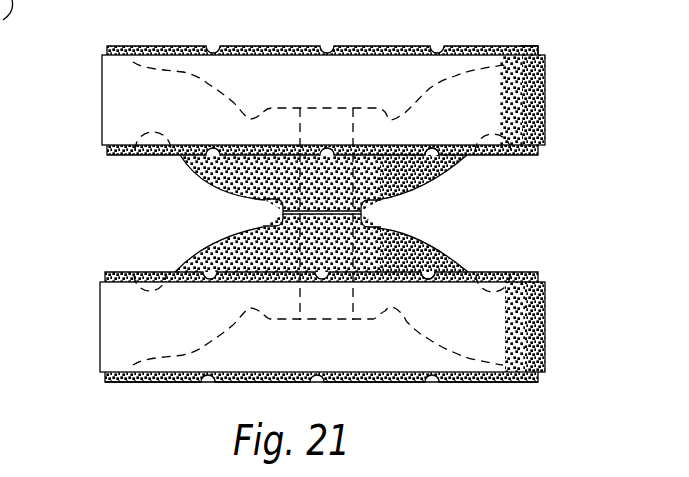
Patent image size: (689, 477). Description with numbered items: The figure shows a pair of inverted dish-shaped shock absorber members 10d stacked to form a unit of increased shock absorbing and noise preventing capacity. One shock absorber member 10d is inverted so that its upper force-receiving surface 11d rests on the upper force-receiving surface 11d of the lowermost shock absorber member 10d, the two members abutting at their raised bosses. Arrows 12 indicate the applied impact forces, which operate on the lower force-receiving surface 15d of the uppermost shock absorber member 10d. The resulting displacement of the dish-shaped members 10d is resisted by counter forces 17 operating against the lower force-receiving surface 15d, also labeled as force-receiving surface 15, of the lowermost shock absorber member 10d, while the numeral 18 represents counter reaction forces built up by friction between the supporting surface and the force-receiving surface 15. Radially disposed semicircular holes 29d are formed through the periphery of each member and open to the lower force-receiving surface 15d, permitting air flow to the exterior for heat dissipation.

The shock absorber member 10d is at (322, 215).
The upper force-receiving surface 11d is at (262, 207).
The applied impact forces 12 is at (122, 46).
The force-receiving surface 15 is at (122, 383).
The lower force-receiving surface 15d is at (533, 47).
The counter forces 17 is at (300, 401).
The counter reaction forces 18 is at (103, 381).
The semicircular holes 29d is at (442, 148).